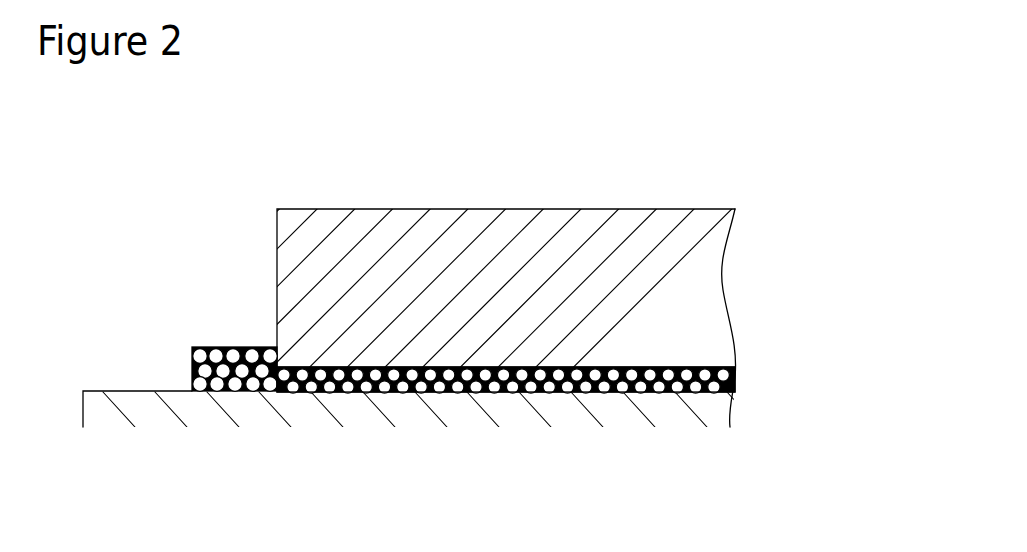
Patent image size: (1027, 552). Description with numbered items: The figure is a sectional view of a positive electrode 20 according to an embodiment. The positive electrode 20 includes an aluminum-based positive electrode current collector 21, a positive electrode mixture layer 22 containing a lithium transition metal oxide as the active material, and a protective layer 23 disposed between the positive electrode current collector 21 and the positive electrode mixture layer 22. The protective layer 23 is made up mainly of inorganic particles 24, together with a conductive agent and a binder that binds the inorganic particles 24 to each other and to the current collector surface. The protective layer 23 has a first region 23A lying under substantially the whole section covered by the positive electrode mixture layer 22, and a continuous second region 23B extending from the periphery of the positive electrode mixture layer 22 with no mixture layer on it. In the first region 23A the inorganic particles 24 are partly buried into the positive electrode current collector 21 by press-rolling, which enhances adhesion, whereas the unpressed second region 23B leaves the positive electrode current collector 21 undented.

The positive electrode 20 is at (703, 132).
The positive electrode current collector 21 is at (128, 390).
The positive electrode mixture layer 22 is at (408, 227).
The protective layer 23 is at (583, 394).
The first region 23A is at (381, 394).
The second region 23B is at (225, 345).
The inorganic particles 24 is at (507, 396).